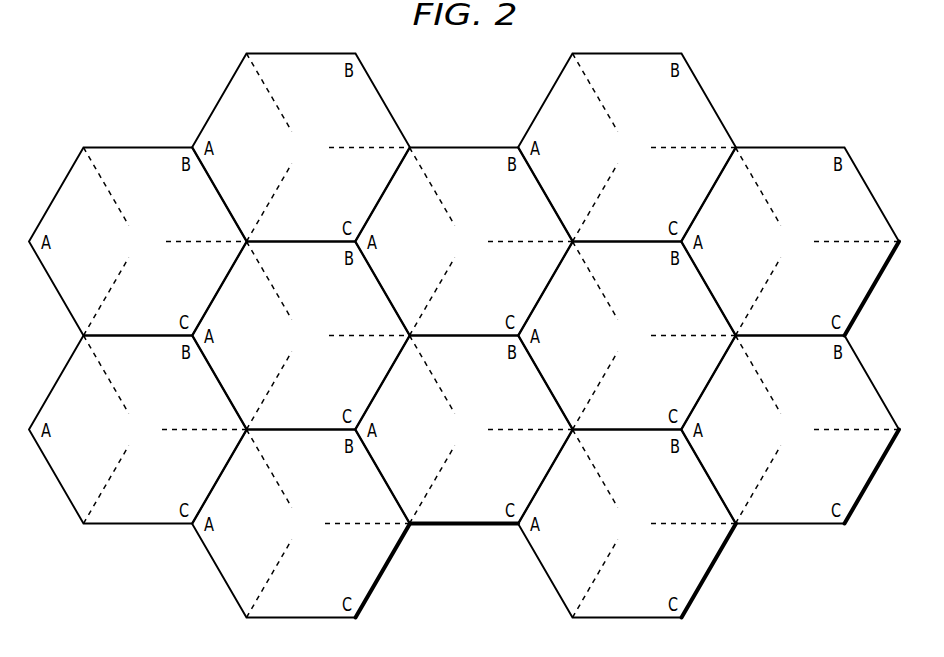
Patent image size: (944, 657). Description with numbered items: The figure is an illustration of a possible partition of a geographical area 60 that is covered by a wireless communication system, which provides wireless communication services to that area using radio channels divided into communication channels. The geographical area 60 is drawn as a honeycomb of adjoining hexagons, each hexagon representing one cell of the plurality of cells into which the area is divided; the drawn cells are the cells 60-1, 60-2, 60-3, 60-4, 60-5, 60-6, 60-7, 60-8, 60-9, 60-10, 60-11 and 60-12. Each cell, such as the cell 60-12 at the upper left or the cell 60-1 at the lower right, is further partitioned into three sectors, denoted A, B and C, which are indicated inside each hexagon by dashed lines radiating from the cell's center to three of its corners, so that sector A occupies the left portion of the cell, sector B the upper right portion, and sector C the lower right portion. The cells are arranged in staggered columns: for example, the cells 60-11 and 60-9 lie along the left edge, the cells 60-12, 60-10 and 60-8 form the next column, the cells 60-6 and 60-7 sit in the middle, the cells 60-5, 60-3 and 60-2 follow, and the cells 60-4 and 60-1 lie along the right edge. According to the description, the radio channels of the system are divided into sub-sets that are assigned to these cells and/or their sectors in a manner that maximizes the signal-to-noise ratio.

The geographical area 60 is at (207, 80).
The cell 60-1 is at (790, 430).
The cell 60-2 is at (627, 524).
The cell 60-3 is at (627, 336).
The cell 60-4 is at (790, 242).
The cell 60-5 is at (627, 148).
The cell 60-6 is at (464, 242).
The cell 60-7 is at (464, 430).
The cell 60-8 is at (301, 524).
The cell 60-9 is at (138, 430).
The cell 60-10 is at (301, 336).
The cell 60-11 is at (138, 242).
The cell 60-12 is at (301, 148).